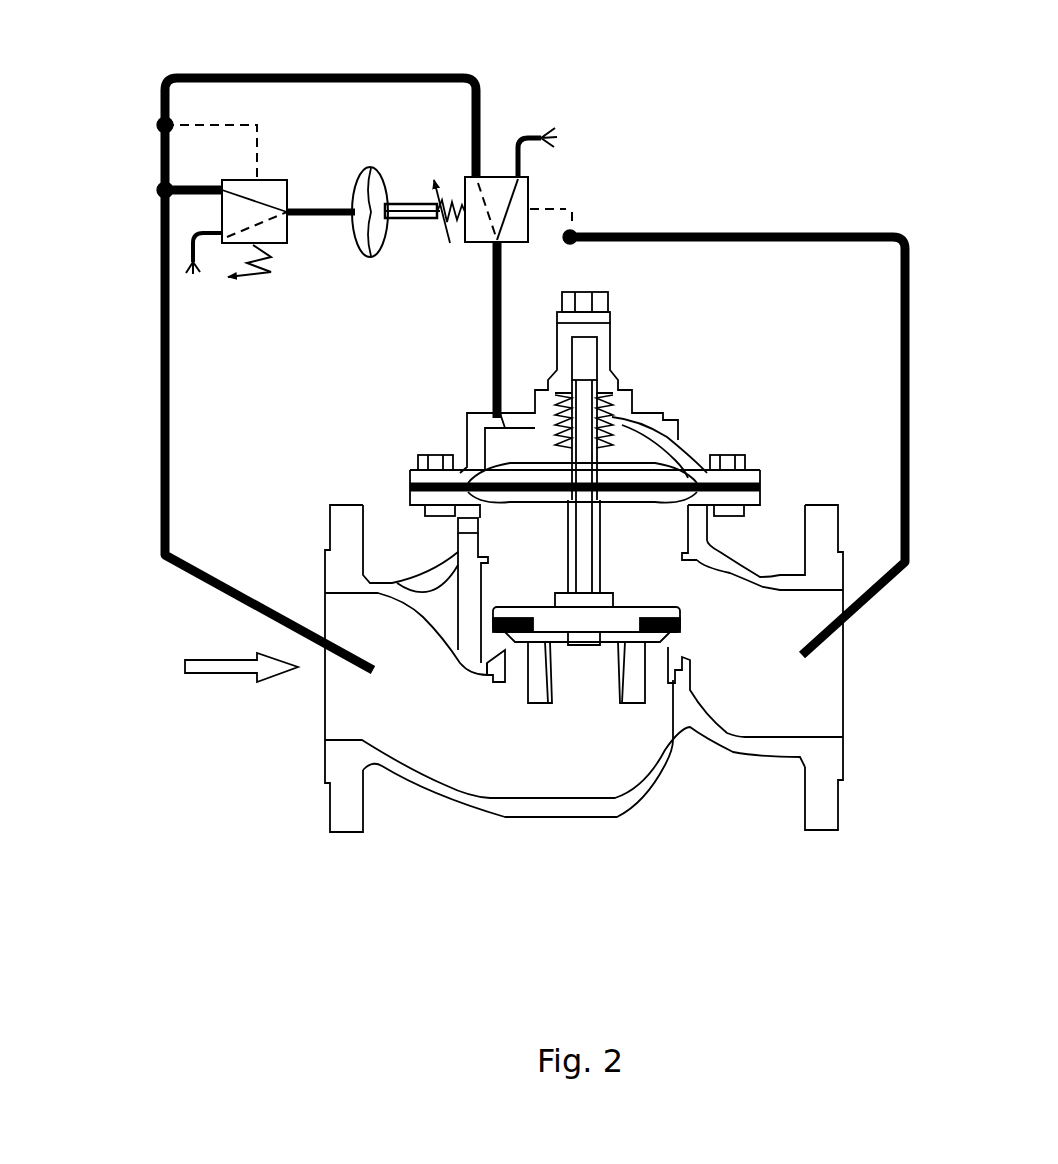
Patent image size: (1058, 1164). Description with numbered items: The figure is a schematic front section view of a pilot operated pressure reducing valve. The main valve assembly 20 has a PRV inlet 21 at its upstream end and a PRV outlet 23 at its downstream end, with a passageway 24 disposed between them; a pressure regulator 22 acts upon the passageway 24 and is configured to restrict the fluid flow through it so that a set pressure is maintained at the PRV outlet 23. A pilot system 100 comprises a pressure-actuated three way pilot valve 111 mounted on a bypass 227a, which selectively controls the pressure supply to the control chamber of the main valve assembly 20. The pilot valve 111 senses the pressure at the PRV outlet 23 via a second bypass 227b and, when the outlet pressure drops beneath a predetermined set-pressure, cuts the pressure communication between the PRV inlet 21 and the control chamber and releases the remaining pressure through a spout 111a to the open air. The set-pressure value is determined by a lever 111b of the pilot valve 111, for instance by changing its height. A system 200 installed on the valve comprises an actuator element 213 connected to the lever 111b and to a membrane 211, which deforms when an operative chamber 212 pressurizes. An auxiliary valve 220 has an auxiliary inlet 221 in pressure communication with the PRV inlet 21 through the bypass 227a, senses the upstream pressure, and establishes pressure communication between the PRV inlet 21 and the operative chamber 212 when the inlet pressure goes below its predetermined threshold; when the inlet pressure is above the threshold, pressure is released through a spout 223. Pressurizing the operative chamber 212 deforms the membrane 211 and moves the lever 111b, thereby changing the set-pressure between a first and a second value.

The pilot system 100 is at (812, 100).
The pilot valve 111 is at (494, 170).
The spout 111a is at (536, 135).
The lever 111b is at (480, 192).
The system 200 is at (380, 350).
The membrane 211 is at (373, 232).
The operative chamber 212 is at (362, 230).
The actuator element 213 is at (407, 203).
The auxiliary valve 220 is at (218, 287).
The auxiliary inlet 221 is at (222, 192).
The spout 223 is at (203, 233).
The bypass 227a is at (143, 103).
The bypass 227b is at (853, 220).
The main valve assembly 20 is at (315, 893).
The PRV inlet 21 is at (313, 716).
The pressure regulator 22 is at (640, 712).
The PRV outlet 23 is at (850, 718).
The passageway 24 is at (512, 650).